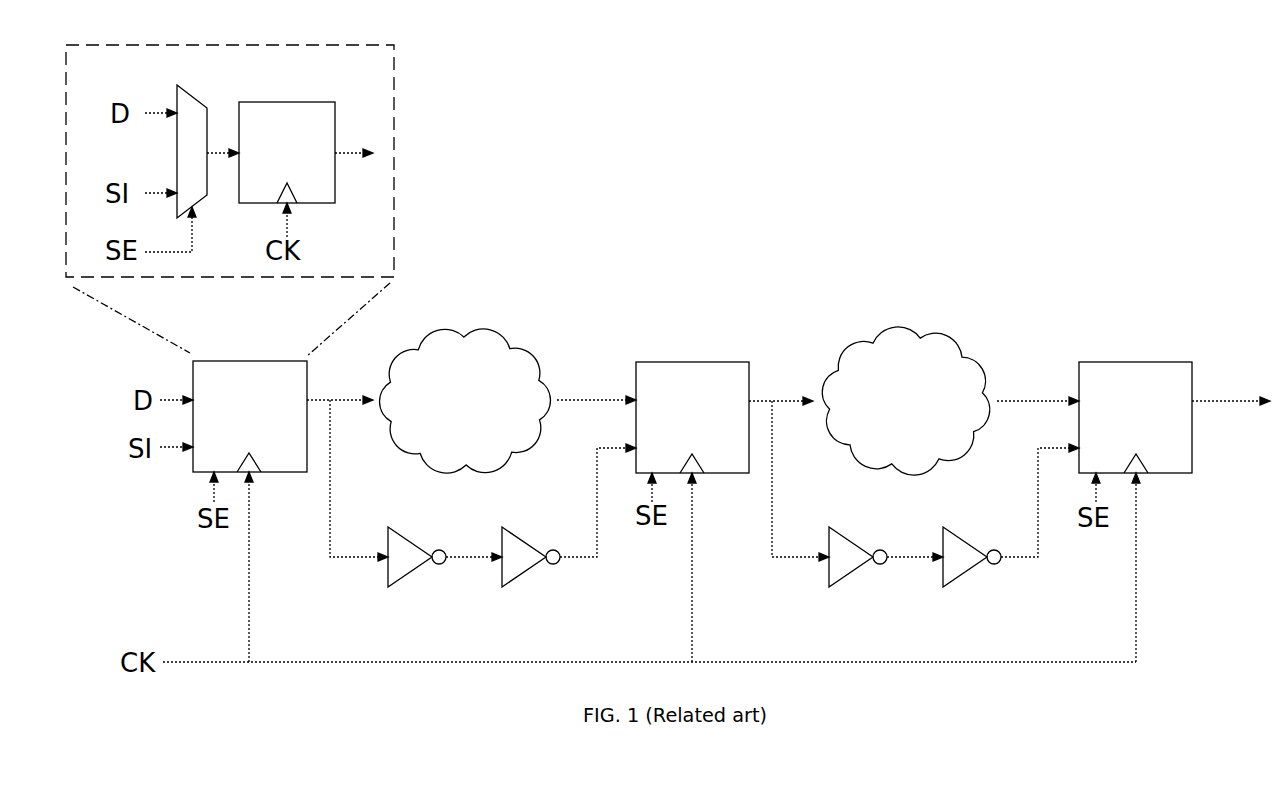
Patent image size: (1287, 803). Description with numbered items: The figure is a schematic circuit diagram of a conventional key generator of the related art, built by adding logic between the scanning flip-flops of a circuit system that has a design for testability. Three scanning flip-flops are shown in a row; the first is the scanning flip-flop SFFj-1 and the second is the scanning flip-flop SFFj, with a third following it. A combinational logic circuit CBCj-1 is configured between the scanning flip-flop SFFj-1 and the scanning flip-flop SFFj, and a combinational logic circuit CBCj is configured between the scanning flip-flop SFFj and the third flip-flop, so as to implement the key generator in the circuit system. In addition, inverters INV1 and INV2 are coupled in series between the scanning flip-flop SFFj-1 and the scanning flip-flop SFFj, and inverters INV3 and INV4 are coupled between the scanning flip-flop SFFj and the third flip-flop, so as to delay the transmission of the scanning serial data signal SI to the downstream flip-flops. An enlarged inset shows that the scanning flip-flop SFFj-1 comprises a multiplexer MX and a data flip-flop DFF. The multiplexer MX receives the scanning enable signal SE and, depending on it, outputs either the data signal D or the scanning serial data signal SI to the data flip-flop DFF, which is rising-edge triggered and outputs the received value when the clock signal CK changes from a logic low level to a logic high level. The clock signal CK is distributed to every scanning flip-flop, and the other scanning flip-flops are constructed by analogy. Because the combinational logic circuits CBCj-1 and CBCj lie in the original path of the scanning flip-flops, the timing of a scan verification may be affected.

The multiplexer MX is at (189, 138).
The data flip-flop DFF is at (287, 152).
The scanning flip-flop SFFj-1 is at (250, 416).
The scanning flip-flop SFFj is at (692, 417).
The combinational logic circuit CBCj-1 is at (465, 401).
The combinational logic circuit CBCj is at (905, 401).
The inverter INV1 is at (414, 577).
The inverter INV2 is at (528, 577).
The inverter INV3 is at (847, 577).
The inverter INV4 is at (965, 575).